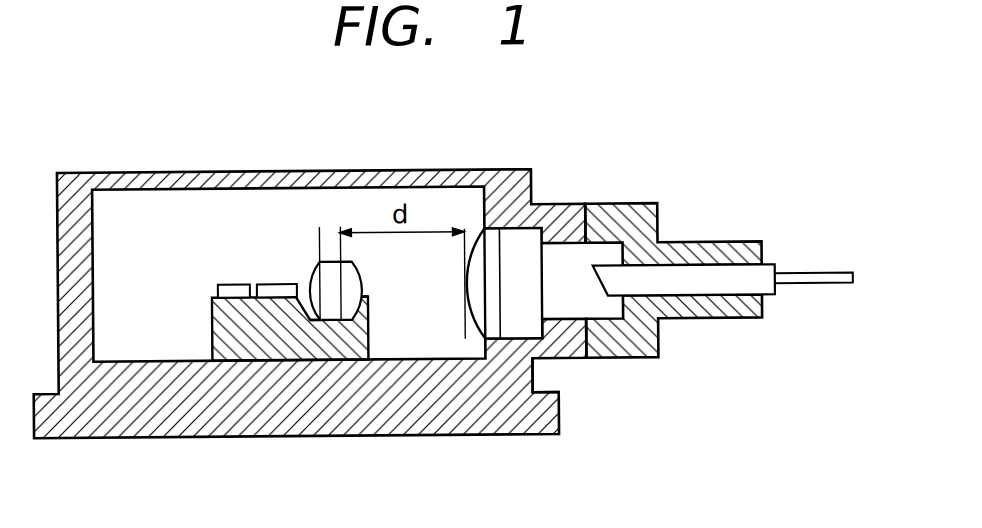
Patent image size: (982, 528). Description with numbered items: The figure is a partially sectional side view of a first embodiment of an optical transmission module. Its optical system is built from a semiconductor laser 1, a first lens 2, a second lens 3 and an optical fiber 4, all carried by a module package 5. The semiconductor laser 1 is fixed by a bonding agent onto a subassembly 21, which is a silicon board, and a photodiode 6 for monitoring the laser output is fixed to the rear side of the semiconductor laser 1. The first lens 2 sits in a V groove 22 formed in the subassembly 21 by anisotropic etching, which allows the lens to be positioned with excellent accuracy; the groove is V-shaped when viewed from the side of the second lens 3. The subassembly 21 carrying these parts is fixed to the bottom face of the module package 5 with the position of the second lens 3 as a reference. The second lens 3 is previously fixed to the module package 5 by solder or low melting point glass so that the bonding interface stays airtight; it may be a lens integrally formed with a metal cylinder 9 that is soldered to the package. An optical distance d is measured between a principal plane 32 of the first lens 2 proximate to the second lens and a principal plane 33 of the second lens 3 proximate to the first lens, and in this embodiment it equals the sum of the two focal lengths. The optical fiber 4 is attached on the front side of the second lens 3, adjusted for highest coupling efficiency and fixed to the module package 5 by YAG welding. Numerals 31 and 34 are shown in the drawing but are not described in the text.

The semiconductor laser 1 is at (278, 285).
The first lens 2 is at (333, 275).
The second lens 3 is at (522, 249).
The optical fiber 4 is at (670, 282).
The module package 5 is at (423, 393).
The photodiode 6 is at (220, 288).
The metal cylinder 9 is at (572, 214).
The subassembly 21 is at (222, 318).
The V groove 22 is at (362, 304).
The seat bottom surface 31 is at (332, 323).
The principal plane 32 is at (348, 314).
The principal plane 33 is at (503, 343).
The recess 34 is at (537, 372).